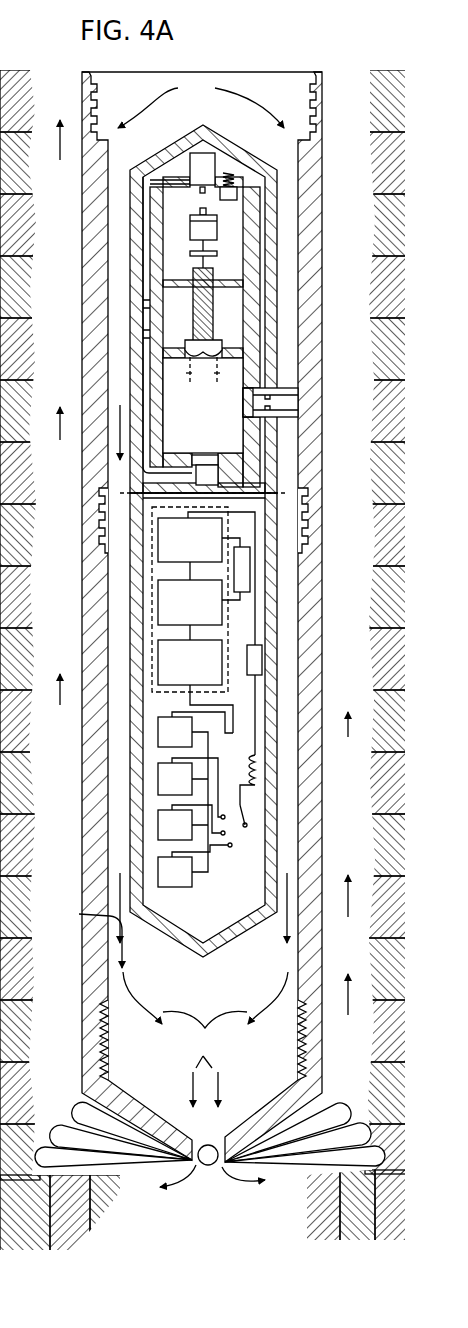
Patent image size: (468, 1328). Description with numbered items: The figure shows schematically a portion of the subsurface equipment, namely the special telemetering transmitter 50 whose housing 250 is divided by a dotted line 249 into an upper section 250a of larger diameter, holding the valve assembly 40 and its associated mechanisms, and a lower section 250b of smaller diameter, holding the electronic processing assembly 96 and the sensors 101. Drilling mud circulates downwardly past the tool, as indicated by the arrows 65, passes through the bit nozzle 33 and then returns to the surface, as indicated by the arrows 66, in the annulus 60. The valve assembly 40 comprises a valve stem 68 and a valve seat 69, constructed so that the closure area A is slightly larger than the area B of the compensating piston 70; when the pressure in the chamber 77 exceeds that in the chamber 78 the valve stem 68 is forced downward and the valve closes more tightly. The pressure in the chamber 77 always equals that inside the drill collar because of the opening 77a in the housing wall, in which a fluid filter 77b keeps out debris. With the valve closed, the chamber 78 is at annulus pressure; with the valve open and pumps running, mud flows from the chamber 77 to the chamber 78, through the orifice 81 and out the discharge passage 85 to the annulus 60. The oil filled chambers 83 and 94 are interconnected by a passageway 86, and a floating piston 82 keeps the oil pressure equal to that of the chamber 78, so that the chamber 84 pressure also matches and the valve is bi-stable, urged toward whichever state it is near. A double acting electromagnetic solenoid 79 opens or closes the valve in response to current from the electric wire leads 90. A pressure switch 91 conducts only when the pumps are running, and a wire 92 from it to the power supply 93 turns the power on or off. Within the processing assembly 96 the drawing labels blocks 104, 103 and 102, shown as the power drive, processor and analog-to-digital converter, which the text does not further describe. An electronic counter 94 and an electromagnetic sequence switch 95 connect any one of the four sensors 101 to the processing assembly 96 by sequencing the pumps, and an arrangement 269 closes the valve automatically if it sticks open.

The bit nozzle 33 is at (212, 1167).
The valve assembly 40 is at (286, 270).
The special telemetering transmitter 50 is at (80, 975).
The annulus 60 is at (60, 78).
The arrows (downward mud flow) 65 is at (172, 592).
The arrows (return mud flow) 66 is at (366, 57).
The valve stem 68 is at (165, 283).
The valve seat 69 is at (217, 349).
The compensating piston 70 is at (214, 276).
The chamber 77 is at (152, 300).
The opening (passageway) 77a is at (136, 311).
The fluid filter 77b is at (150, 332).
The chamber 78 is at (175, 379).
The double acting electromagnetic solenoid 79 is at (210, 254).
The orifice 81 is at (258, 392).
The floating piston 82 is at (221, 459).
The chamber (oil filled) 83 is at (216, 475).
The chamber 84 is at (175, 223).
The discharge passage 85 is at (321, 401).
The passageway 86 is at (160, 348).
The electric wire leads 90 is at (214, 228).
The pressure switch 91 is at (238, 193).
The wire 92 is at (238, 182).
The power supply 93 is at (246, 566).
The electronic counter 94 is at (262, 660).
The electromagnetic sequence switch 95 is at (253, 825).
The electronic processing assembly 96 is at (152, 511).
The sensors 101 is at (158, 870).
The A/D converter 102 is at (158, 660).
The processor 103 is at (158, 602).
The power drive 104 is at (158, 540).
The dotted line 249 is at (110, 495).
The housing 250 is at (224, 148).
The upper section 250a is at (135, 487).
The lower section 250b is at (136, 710).
The automatic valve closing arrangement 269 is at (206, 165).